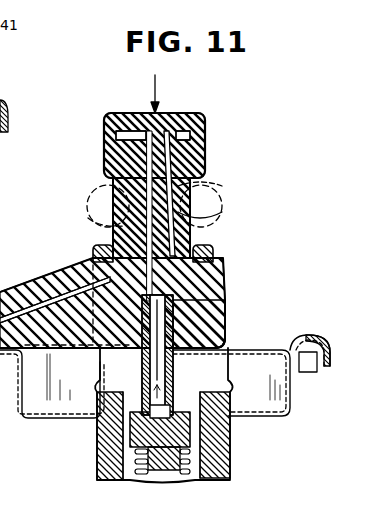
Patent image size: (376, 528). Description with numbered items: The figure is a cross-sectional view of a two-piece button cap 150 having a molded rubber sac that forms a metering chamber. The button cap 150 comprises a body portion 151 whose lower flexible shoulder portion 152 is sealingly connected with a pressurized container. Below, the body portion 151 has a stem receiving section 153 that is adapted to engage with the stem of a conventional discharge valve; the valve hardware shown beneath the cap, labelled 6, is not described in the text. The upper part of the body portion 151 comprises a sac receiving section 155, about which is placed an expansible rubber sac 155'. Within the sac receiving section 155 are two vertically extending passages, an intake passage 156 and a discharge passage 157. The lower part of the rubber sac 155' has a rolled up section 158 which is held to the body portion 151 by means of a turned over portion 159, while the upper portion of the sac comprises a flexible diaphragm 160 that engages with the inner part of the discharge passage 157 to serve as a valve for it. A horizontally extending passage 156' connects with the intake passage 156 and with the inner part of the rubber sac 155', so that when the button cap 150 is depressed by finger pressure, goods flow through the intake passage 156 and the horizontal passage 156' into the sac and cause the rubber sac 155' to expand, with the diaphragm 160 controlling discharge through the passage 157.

The valve spring assembly 6 is at (170, 430).
The button cap 150 is at (62, 262).
The body portion 151 is at (226, 286).
The lower flexible shoulder portion 152 is at (276, 340).
The stem receiving section 153 is at (196, 331).
The sac receiving section 155 is at (185, 213).
The expansible rubber sac 155' is at (222, 185).
The intake passage 156 is at (210, 193).
The horizontally extending passage 156' is at (224, 208).
The discharge passage 157 is at (120, 209).
The rolled up section 158 is at (214, 254).
The turned over portion 159 is at (214, 234).
The flexible diaphragm 160 is at (186, 122).